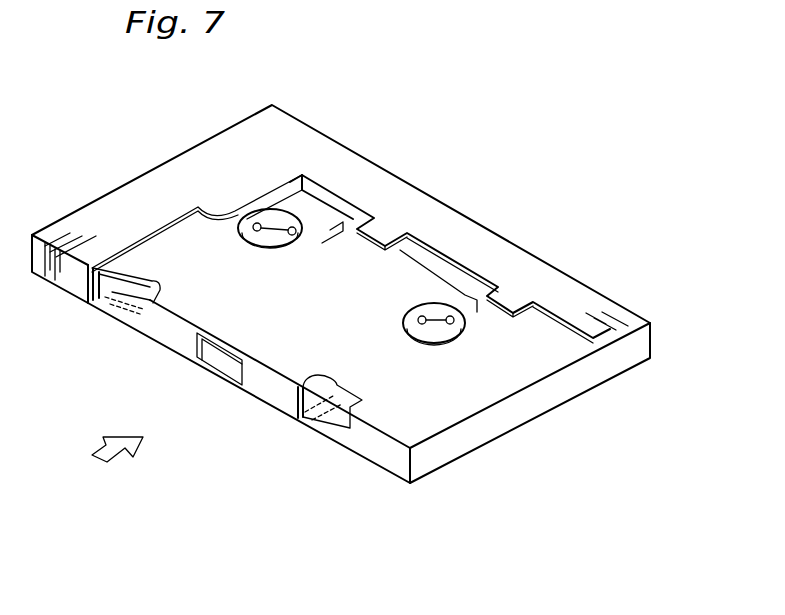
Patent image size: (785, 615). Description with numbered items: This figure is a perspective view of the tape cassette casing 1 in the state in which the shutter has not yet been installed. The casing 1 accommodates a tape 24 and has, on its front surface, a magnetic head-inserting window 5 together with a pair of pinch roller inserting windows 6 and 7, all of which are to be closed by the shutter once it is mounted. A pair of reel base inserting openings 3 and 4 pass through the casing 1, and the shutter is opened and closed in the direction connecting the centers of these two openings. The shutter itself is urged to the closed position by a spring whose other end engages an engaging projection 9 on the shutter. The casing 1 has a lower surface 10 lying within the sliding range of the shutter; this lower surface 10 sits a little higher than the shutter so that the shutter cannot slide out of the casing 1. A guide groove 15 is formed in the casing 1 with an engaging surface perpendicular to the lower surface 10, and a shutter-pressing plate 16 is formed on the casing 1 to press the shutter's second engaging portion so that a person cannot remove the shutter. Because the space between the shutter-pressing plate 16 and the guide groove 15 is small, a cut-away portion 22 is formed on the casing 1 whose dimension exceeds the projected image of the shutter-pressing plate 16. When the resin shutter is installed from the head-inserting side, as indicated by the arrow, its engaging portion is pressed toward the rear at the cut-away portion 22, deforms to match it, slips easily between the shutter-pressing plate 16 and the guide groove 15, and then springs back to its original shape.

The casing 1 is at (502, 250).
The reel base inserting opening 3 is at (273, 228).
The reel base inserting opening 4 is at (440, 330).
The magnetic head-inserting window 5 is at (227, 358).
The pinch roller inserting window 6 is at (123, 288).
The pinch roller inserting window 7 is at (322, 396).
The engaging projection 9 is at (475, 198).
The lower surface 10 is at (202, 243).
The guide groove 15 is at (317, 205).
The shutter-pressing plate 16 is at (382, 228).
The cut-away portion 22 is at (352, 247).
The tape 24 is at (125, 320).